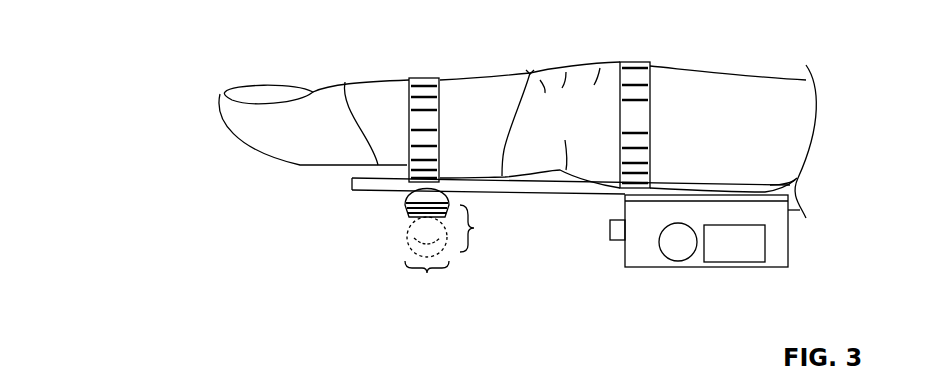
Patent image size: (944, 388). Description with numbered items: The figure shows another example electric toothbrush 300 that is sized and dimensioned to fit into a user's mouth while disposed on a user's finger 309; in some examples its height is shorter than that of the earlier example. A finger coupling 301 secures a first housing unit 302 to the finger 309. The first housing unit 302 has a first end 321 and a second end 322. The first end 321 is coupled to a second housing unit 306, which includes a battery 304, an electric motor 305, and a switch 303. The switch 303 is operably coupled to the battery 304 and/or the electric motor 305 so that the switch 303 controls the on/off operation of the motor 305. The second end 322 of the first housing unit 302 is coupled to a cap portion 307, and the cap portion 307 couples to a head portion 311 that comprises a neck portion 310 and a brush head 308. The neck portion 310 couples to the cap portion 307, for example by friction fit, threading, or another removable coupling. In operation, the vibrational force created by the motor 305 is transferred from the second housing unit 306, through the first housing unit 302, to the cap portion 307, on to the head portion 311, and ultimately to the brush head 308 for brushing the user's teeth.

The electric toothbrush 300 is at (176, 46).
The finger coupling 301 is at (424, 78).
The first housing unit 302 is at (530, 72).
The switch 303 is at (610, 232).
The battery 304 is at (680, 246).
The electric motor 305 is at (742, 240).
The second housing unit 306 is at (740, 268).
The cap portion 307 is at (405, 208).
The brush head 308 is at (407, 232).
The finger 309 is at (707, 115).
The neck portion 310 is at (455, 242).
The head portion 311 is at (374, 238).
The first end 321 is at (796, 181).
The second end 322 is at (345, 84).